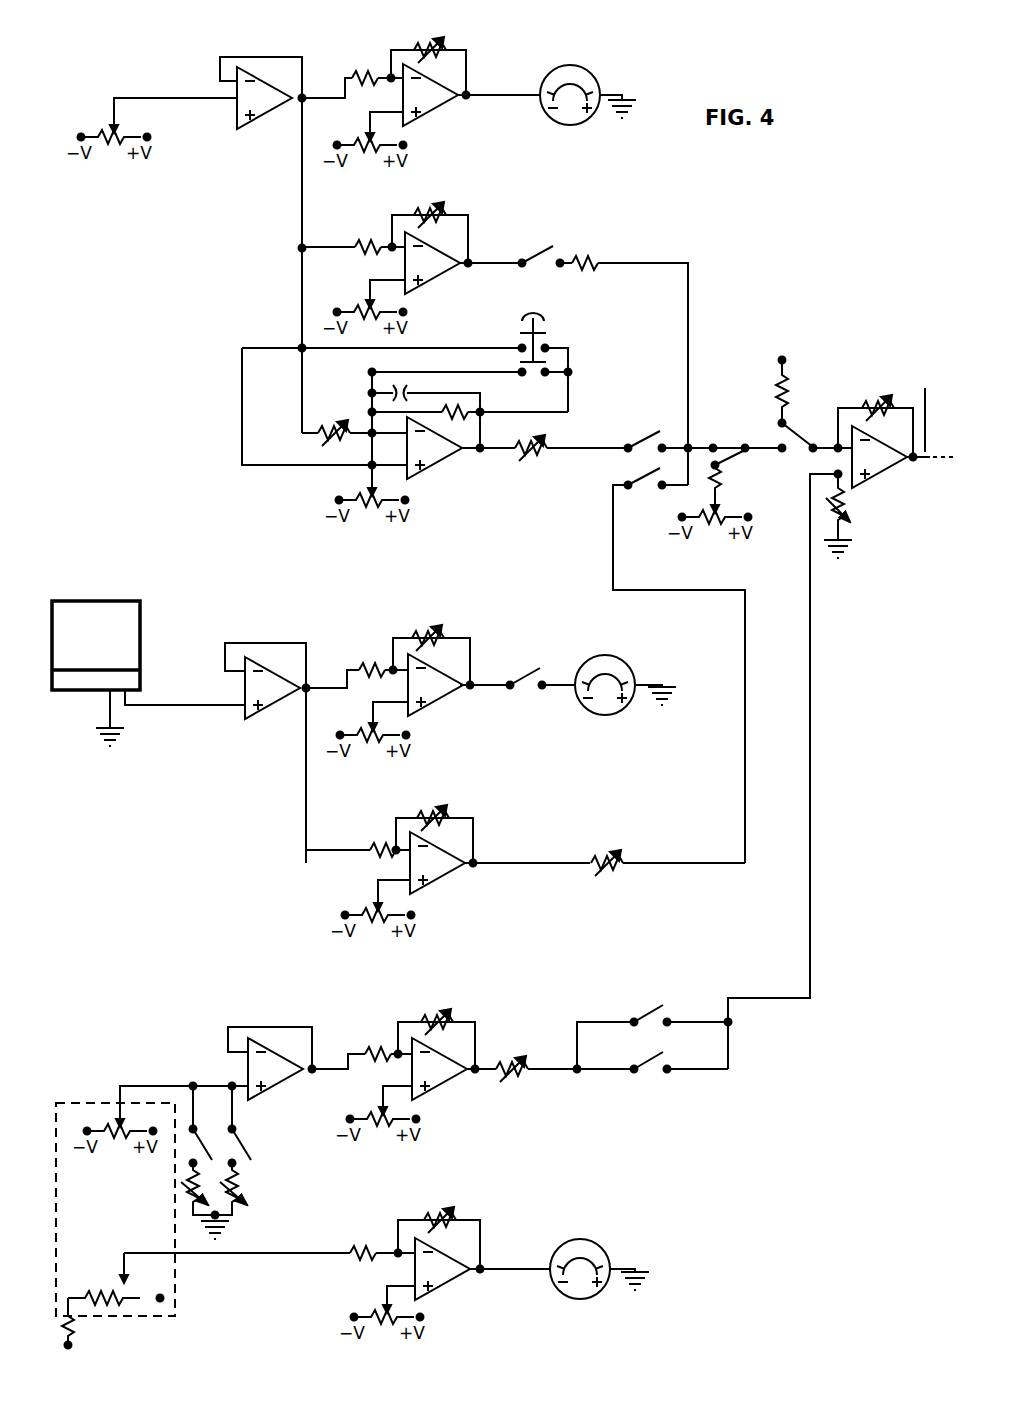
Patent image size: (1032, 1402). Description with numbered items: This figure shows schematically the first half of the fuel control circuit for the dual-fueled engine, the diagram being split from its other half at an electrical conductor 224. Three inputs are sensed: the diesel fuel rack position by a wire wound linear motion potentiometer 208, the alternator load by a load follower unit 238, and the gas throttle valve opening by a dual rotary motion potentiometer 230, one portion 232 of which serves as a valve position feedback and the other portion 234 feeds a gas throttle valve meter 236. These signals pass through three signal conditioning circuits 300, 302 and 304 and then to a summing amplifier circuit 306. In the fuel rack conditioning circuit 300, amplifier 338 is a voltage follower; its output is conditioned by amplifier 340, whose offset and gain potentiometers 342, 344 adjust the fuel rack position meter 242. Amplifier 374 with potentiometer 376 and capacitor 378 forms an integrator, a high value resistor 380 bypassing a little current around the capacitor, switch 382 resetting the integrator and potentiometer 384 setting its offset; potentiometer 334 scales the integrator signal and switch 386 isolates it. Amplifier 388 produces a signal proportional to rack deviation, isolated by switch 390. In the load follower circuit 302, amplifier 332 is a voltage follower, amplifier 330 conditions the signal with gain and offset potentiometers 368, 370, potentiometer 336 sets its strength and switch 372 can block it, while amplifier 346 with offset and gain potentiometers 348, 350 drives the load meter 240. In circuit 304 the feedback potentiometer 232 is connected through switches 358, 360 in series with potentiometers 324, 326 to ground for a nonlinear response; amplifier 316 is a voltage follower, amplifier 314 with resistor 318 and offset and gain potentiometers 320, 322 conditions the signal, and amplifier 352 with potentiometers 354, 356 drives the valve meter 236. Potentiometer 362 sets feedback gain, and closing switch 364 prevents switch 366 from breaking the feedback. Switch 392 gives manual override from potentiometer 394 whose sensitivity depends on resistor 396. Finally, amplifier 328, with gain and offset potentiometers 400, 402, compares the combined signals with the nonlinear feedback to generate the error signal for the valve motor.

The wire wound linear motion potentiometer 208 is at (100, 132).
The electrical conductor 224 is at (923, 407).
The dual rotary motion potentiometer 230 is at (150, 1325).
The valve position feedback potentiometer 232 is at (115, 1125).
The valve position meter potentiometer 234 is at (105, 1292).
The gas throttle valve meter 236 is at (590, 1244).
The load follower unit 238 is at (104, 600).
The load meter 240 is at (626, 668).
The fuel rack position meter 242 is at (572, 126).
The fuel rack potentiometer signal conditioning circuit 300 is at (205, 228).
The load follower conditioning circuit 302 is at (258, 812).
The gas throttle valve position conditioning circuit 304 is at (168, 1022).
The summing amplifier circuit 306 is at (853, 352).
The amplifier 314 is at (440, 1084).
The amplifier 316 is at (284, 1084).
The resistor 318 is at (377, 1049).
The potentiometer 320 is at (377, 1141).
The potentiometer 322 is at (425, 1030).
The potentiometer 324 is at (190, 1197).
The potentiometer 326 is at (242, 1189).
The amplifier 328 is at (895, 471).
The amplifier 330 is at (447, 877).
The amplifier 332 is at (272, 722).
The potentiometer 334 is at (548, 440).
The potentiometer 336 is at (611, 873).
The amplifier 338 is at (268, 124).
The amplifier 340 is at (432, 114).
The potentiometer 342 is at (366, 160).
The potentiometer 344 is at (444, 46).
The amplifier 346 is at (440, 702).
The potentiometer 348 is at (372, 754).
The potentiometer 350 is at (428, 634).
The amplifier 352 is at (450, 1285).
The potentiometer 354 is at (374, 1313).
The potentiometer 356 is at (432, 1222).
The switch 358 is at (202, 1150).
The switch 360 is at (245, 1154).
The potentiometer 362 is at (505, 1056).
The switch 364 is at (650, 1012).
The switch 366 is at (657, 1061).
The potentiometer 368 is at (426, 830).
The potentiometer 370 is at (379, 934).
The switch 372 is at (646, 476).
The amplifier 374 is at (445, 466).
The potentiometer 376 is at (330, 428).
The capacitor 378 is at (415, 388).
The high value resistor 380 is at (468, 406).
The switch 382 is at (536, 320).
The potentiometer 384 is at (375, 522).
The switch 386 is at (648, 430).
The amplifier 388 is at (440, 270).
The switch 390 is at (540, 250).
The switch 392 is at (721, 455).
The potentiometer 394 is at (710, 532).
The resistor 396 is at (722, 492).
The potentiometer 400 is at (868, 416).
The potentiometer 402 is at (832, 526).